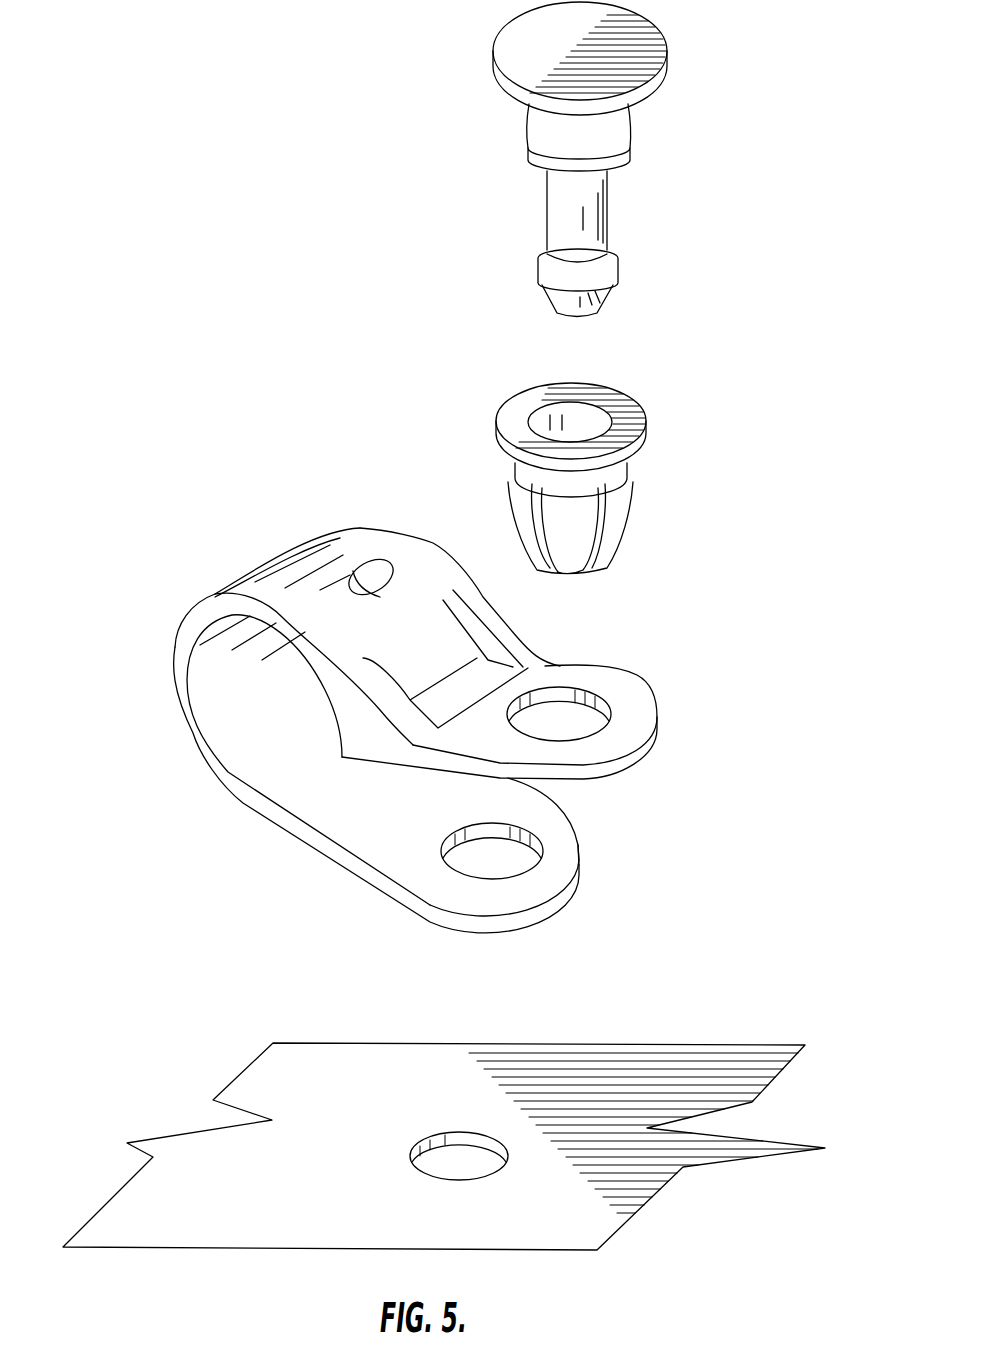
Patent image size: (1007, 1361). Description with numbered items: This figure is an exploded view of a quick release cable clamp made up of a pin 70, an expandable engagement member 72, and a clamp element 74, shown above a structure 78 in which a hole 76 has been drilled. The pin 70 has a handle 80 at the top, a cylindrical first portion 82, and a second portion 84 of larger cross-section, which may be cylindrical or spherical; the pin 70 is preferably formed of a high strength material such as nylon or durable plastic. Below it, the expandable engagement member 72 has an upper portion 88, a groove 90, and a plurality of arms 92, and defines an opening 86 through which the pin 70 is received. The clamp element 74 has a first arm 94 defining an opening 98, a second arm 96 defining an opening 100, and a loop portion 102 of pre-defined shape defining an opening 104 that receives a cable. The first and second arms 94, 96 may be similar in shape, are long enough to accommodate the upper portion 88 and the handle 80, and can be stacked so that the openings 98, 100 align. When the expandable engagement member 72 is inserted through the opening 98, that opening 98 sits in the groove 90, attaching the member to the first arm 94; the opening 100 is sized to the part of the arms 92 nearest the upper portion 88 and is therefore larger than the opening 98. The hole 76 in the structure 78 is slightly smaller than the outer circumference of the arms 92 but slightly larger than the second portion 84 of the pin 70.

The pin 70 is at (747, 40).
The expandable engagement member 72 is at (745, 367).
The clamp element 74 is at (143, 535).
The hole 76 is at (463, 1140).
The structure 78 is at (770, 1082).
The handle 80 is at (602, 127).
The first portion 82 is at (590, 220).
The second portion 84 is at (600, 305).
The opening 86 is at (570, 413).
The upper portion 88 is at (645, 418).
The groove 90 is at (603, 475).
The arms 92 is at (625, 542).
The first arm 94 is at (643, 732).
The second arm 96 is at (533, 913).
The opening 98 is at (568, 697).
The opening 100 is at (503, 858).
The loop portion 102 is at (285, 573).
The opening 104 is at (242, 695).